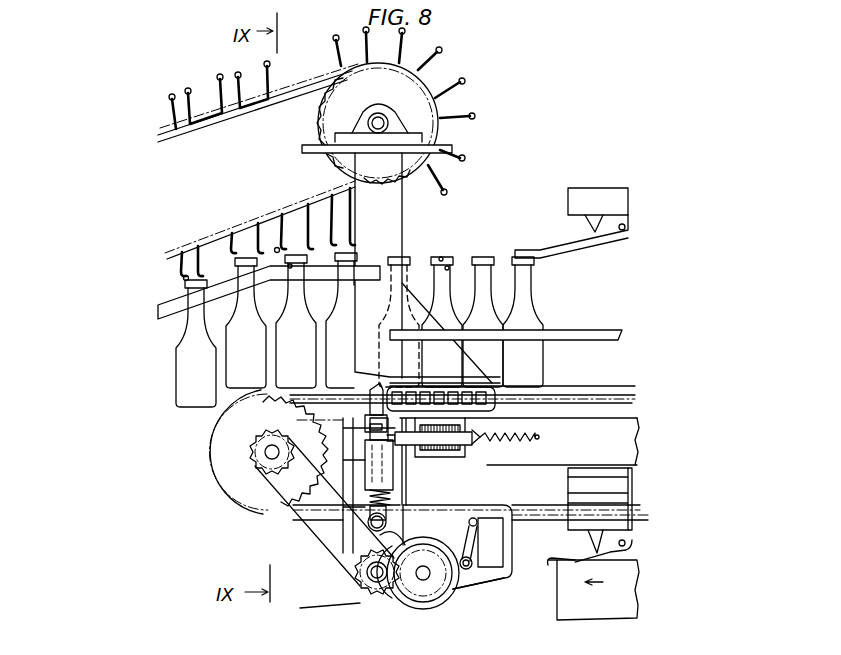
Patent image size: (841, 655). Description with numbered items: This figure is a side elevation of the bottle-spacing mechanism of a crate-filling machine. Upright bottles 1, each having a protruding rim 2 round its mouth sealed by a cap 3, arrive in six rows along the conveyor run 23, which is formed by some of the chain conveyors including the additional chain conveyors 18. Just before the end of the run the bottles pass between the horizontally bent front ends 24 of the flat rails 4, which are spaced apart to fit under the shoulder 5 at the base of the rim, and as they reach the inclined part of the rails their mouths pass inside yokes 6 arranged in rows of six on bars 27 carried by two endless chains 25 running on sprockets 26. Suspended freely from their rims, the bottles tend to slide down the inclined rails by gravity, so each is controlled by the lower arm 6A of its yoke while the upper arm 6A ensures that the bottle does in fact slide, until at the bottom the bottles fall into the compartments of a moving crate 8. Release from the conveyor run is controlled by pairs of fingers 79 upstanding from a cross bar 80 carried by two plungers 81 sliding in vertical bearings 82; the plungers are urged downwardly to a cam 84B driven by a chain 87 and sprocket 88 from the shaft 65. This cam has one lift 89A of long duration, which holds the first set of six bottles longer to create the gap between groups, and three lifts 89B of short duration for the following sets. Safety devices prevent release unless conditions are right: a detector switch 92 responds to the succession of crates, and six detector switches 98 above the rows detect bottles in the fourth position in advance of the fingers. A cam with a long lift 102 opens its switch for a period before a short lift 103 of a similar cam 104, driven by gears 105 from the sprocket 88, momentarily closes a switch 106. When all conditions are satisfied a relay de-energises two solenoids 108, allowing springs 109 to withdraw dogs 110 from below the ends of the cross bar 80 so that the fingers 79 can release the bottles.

The bottle 1 is at (487, 314).
The rim 2 is at (448, 268).
The cap 3 is at (441, 259).
The rails 4 is at (158, 305).
The shoulder 5 is at (193, 292).
The yokes 6 is at (263, 239).
The arm of yoke 6A is at (277, 247).
The crate 8 is at (623, 590).
The additional chain conveyors 18 is at (557, 510).
The conveyor run 23 is at (567, 400).
The front ends of rails 24 is at (290, 267).
The endless chains 25 is at (340, 72).
The sprockets 26 is at (400, 96).
The bars 27 is at (195, 256).
The shaft 65 is at (268, 456).
The fingers 79 is at (377, 408).
The cross bar 80 is at (380, 432).
The plungers 81 is at (388, 470).
The vertical bearings 82 is at (388, 482).
The cam 84B is at (350, 554).
The chain 87 is at (300, 524).
The sprocket 88 is at (353, 590).
The lift of long duration 89A is at (378, 540).
The lifts of short duration 89B is at (347, 562).
The detector switch 92 is at (613, 527).
The detector switches 98 is at (580, 203).
The long lift 102 is at (474, 519).
The short lift 103 is at (447, 540).
The cam 104 is at (457, 591).
The gears 105 is at (436, 597).
The switch 106 is at (493, 546).
The solenoids 108 is at (497, 428).
The springs 109 is at (507, 439).
The dogs 110 is at (363, 448).